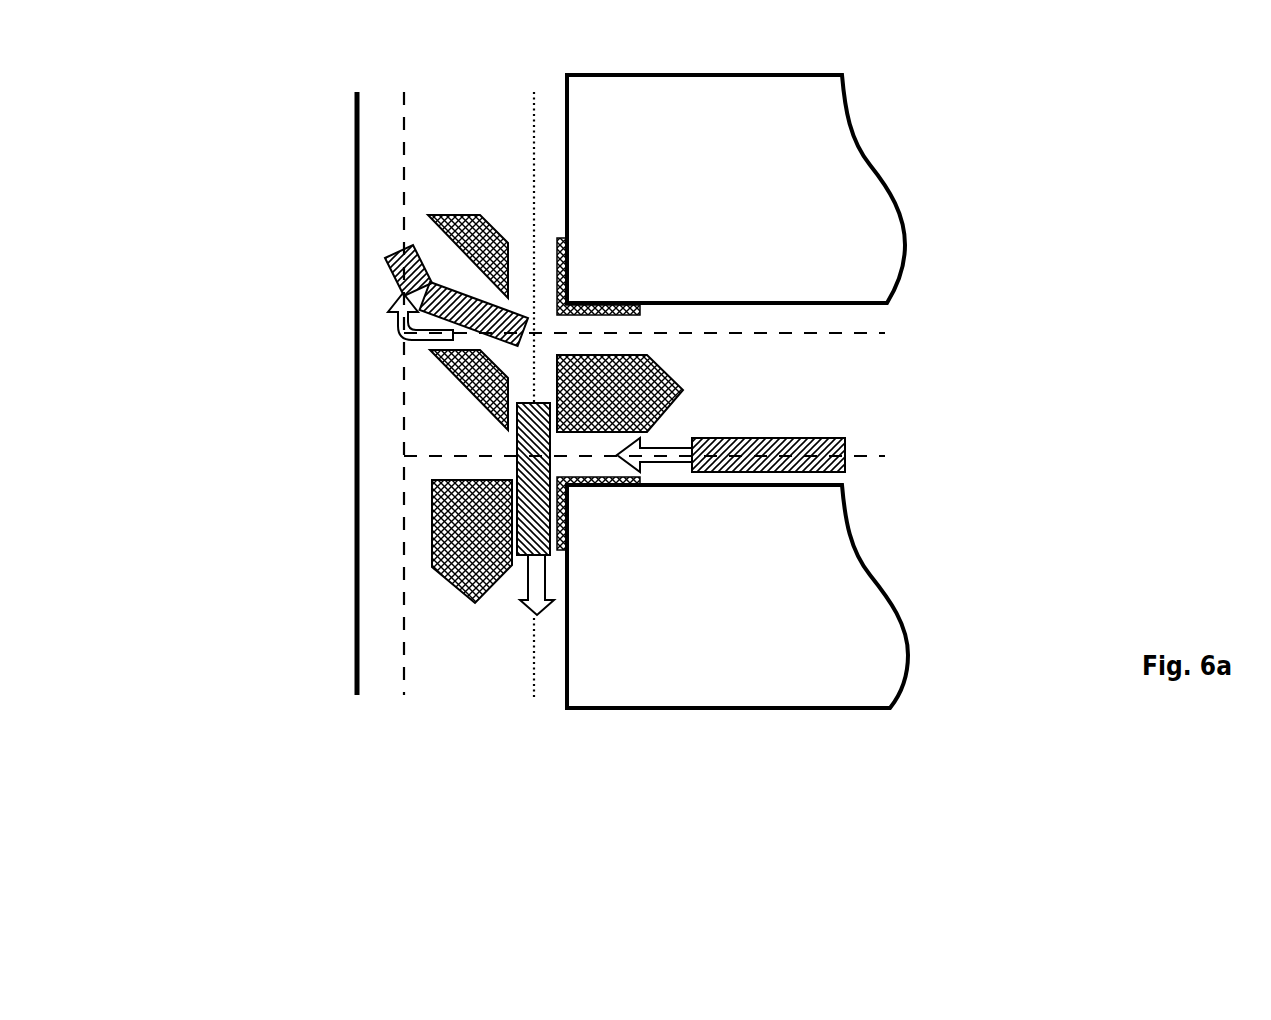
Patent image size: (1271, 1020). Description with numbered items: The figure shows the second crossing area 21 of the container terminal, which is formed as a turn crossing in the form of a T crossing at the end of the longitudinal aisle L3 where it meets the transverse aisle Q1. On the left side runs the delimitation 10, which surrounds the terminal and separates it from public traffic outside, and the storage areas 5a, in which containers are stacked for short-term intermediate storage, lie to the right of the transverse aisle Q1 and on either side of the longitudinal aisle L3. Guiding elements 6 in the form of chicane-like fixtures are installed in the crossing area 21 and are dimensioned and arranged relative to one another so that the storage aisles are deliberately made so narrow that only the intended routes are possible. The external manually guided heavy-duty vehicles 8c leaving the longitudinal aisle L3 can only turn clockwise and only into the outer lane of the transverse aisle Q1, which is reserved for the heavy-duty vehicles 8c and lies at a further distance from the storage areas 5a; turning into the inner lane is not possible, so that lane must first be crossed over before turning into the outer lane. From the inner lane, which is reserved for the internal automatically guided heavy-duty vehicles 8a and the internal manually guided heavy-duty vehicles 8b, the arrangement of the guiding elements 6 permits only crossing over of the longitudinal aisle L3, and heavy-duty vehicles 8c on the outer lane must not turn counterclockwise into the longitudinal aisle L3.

The delimitation 10 is at (355, 173).
The second crossing area 21 is at (312, 413).
The transverse aisle Q1 is at (450, 172).
The longitudinal aisle L3 is at (828, 378).
The storage area 5a is at (775, 222).
The guiding element 6 is at (482, 213).
The external manually guided heavy-duty vehicle 8c is at (388, 277).
The internal automatically guided heavy-duty vehicle 8a is at (345, 509).
The internal manually guided heavy-duty vehicle 8b is at (515, 465).